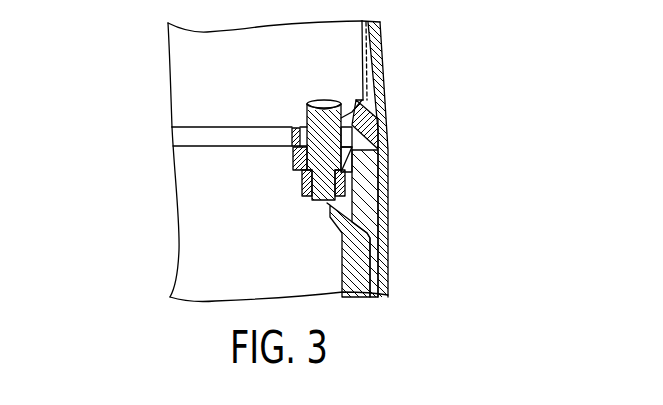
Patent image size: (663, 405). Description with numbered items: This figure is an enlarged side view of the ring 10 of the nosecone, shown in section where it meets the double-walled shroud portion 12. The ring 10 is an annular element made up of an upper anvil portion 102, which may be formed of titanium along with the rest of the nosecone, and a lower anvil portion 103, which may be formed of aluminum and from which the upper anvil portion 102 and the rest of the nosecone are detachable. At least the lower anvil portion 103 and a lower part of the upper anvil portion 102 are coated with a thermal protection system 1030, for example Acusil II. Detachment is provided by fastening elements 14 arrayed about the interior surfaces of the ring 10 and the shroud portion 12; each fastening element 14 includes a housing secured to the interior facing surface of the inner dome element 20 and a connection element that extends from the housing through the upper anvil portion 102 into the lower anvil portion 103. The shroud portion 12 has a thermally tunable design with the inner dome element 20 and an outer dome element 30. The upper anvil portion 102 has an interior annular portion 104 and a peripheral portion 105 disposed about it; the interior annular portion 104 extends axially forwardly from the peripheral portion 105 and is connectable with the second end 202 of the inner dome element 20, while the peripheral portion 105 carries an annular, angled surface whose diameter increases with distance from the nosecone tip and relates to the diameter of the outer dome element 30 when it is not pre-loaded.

The ring 10 is at (116, 132).
The double-walled shroud portion 12 is at (116, 25).
The fastening elements 14 is at (378, 137).
The inner dome element 20 is at (372, 63).
The outer dome element 30 is at (381, 31).
The upper anvil portion 102 is at (172, 128).
The lower anvil portion 103 is at (223, 237).
The interior annular portion 104 is at (294, 161).
The peripheral portion 105 is at (387, 125).
The second end 202 is at (358, 100).
The thermal protection system 1030 is at (380, 240).